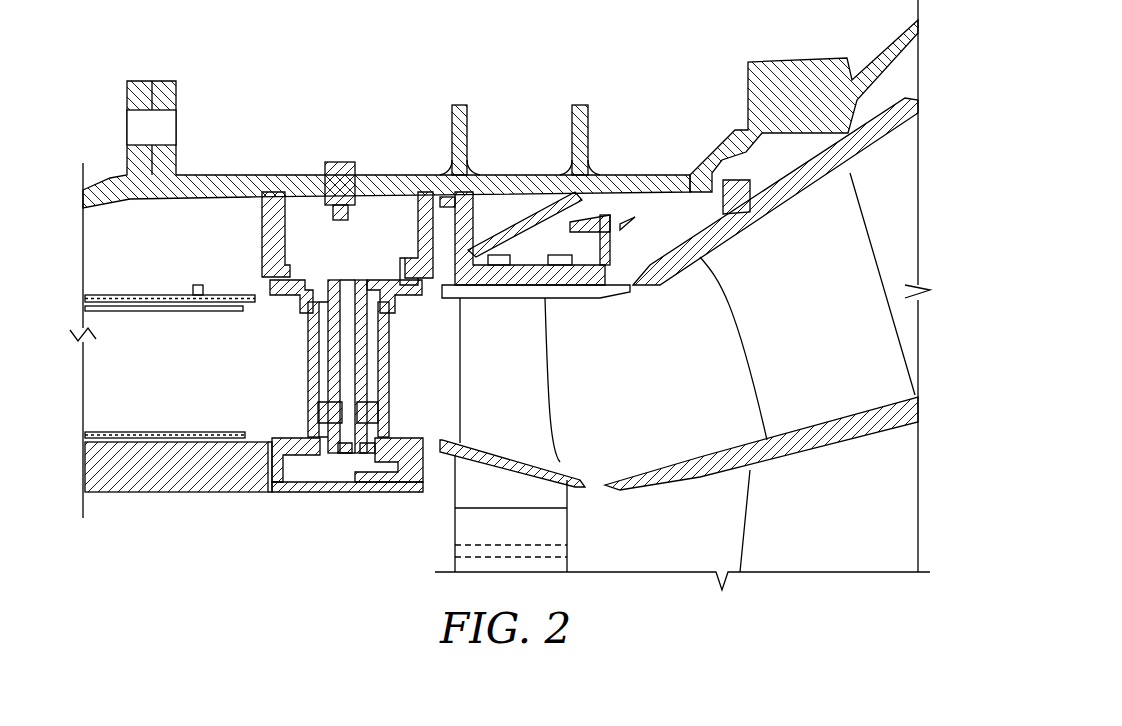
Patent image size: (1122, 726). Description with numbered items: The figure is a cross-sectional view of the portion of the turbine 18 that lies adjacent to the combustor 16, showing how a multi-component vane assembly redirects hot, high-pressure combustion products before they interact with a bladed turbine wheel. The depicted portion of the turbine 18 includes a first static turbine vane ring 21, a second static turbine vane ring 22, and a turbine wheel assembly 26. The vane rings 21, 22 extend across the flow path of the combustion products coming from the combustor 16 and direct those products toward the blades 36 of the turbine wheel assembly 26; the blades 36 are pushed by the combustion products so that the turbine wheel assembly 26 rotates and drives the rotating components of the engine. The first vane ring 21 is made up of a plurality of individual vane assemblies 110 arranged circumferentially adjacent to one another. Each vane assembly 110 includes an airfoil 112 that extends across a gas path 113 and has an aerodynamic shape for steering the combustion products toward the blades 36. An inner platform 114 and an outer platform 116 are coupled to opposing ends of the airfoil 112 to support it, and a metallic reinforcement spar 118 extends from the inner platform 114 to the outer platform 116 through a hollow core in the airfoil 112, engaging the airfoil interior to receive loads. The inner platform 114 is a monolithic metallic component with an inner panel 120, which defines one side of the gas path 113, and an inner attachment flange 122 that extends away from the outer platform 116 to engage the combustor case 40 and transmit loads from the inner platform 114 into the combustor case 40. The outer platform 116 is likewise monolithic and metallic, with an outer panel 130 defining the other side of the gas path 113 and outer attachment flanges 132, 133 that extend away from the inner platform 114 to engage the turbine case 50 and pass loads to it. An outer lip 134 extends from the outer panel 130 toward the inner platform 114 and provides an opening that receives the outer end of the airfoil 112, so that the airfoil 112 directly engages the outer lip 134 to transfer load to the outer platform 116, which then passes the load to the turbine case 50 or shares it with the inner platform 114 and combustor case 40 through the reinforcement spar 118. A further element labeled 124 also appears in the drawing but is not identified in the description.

The combustor 16 is at (123, 498).
The turbine 18 is at (640, 100).
The first static turbine vane ring 21 is at (302, 420).
The second static turbine vane ring 22 is at (880, 245).
The turbine wheel assembly 26 is at (560, 440).
The blades 36 is at (560, 405).
The combustor case 40 is at (245, 468).
The turbine case 50 is at (490, 170).
The vane assembly 110 is at (383, 240).
The airfoil 112 is at (302, 355).
The gas path 113 is at (302, 380).
The inner platform 114 is at (268, 457).
The outer platform 116 is at (268, 290).
The reinforcement spar 118 is at (359, 282).
The inner panel 120 is at (405, 437).
The inner attachment flange 122 is at (277, 493).
The hook block 124 is at (385, 493).
The outer panel 130 is at (472, 250).
The outer attachment flange 132 is at (292, 267).
The outer attachment flange 133 is at (410, 252).
The outer lip 134 is at (432, 303).